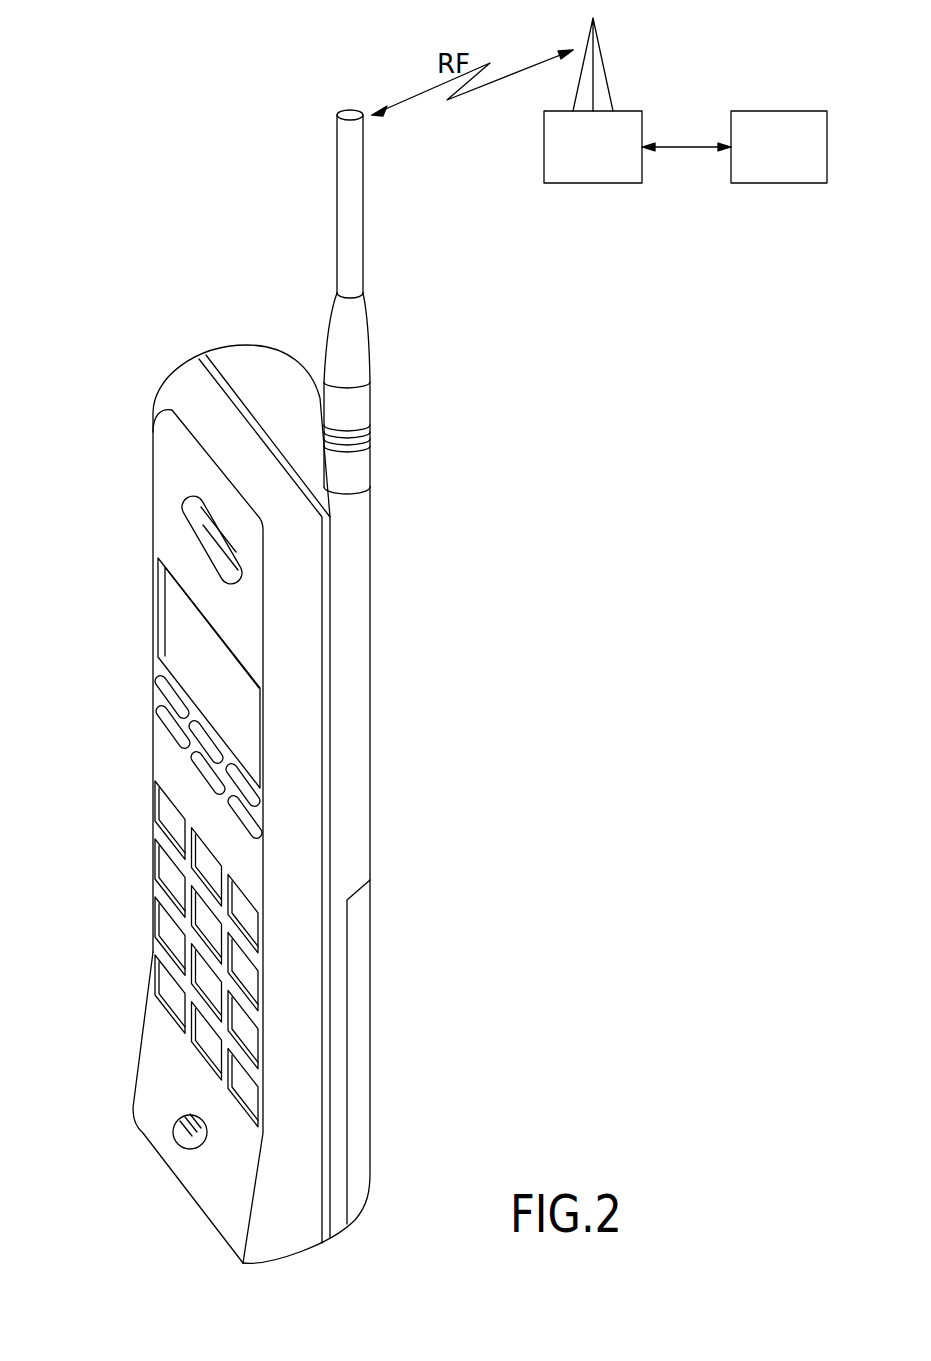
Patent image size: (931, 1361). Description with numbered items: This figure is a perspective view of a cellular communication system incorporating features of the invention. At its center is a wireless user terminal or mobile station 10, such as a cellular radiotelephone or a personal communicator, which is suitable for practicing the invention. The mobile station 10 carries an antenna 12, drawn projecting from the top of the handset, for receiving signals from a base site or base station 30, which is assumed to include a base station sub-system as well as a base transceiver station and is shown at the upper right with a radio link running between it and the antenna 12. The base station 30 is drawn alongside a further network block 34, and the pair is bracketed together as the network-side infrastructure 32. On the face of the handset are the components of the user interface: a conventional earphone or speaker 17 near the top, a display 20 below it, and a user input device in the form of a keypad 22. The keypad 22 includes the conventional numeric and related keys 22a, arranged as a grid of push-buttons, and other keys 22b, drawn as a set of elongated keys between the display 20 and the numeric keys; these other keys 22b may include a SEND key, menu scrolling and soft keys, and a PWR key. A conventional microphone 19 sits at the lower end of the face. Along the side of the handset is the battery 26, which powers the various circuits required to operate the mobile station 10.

The mobile station 10 is at (135, 386).
The antenna 12 is at (342, 190).
The speaker 17 is at (197, 517).
The microphone 19 is at (180, 1147).
The display 20 is at (172, 628).
The keypad 22 is at (255, 962).
The numeric and related keys 22a is at (170, 983).
The other keys 22b is at (208, 745).
The battery 26 is at (367, 1028).
The base station 30 is at (593, 183).
The base station/MSC interworking (BMI) 32 is at (808, 218).
The mobile switching center (MSC) 34 is at (747, 183).